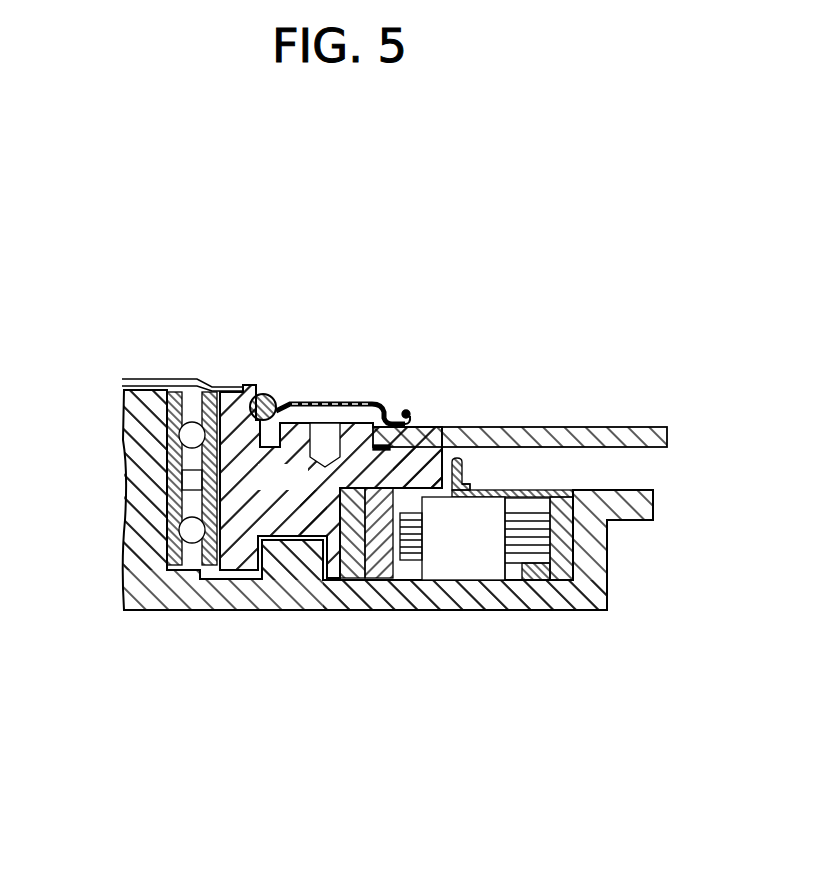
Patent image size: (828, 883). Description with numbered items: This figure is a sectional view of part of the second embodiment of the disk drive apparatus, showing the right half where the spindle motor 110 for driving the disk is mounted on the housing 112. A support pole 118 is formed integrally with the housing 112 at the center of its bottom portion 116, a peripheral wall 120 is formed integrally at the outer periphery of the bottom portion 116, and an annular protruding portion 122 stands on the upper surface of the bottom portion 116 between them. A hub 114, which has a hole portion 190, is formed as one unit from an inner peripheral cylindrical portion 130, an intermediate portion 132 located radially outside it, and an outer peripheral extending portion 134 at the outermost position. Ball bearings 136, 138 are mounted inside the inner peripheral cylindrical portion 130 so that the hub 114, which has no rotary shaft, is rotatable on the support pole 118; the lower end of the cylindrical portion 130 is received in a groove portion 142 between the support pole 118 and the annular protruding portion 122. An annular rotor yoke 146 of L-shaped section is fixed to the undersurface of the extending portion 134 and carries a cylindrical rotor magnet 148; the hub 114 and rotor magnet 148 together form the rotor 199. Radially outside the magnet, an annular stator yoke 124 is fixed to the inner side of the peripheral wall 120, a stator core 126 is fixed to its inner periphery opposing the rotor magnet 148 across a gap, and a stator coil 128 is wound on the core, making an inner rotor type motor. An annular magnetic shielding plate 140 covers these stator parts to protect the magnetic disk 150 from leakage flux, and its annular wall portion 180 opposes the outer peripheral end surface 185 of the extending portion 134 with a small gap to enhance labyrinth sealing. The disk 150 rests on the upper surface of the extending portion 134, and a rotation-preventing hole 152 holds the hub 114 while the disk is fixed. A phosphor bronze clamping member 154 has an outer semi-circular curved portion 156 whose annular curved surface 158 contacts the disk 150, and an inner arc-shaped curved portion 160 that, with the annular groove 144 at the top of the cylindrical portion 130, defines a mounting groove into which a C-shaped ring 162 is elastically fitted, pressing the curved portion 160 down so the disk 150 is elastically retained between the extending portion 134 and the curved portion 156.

The spindle motor 110 is at (247, 616).
The housing 112 is at (452, 612).
The hub 114 is at (253, 383).
The bottom portion 116 is at (370, 580).
The support pole 118 is at (128, 492).
The peripheral wall 120 is at (593, 572).
The annular protruding portion 122 is at (286, 552).
The annular stator yoke 124 is at (543, 573).
The stator core 126 is at (412, 562).
The stator coil 128 is at (474, 568).
The inner peripheral cylindrical portion 130 is at (243, 566).
The intermediate portion 132 is at (312, 516).
The outer peripheral extending portion 134 is at (420, 460).
The ball bearing 136 is at (180, 430).
The ball bearing 138 is at (180, 537).
The annular magnetic shielding plate 140 is at (535, 490).
The groove portion 142 is at (271, 546).
The annular groove 144 is at (247, 383).
The annular rotor yoke 146 is at (356, 570).
The rotor magnet 148 is at (380, 579).
The magnetic disk 150 is at (648, 427).
The rotation-preventing hole 152 is at (330, 437).
The clamping member 154 is at (317, 402).
The semi-circular curved portion 156 is at (400, 410).
The annular curved surface 158 is at (412, 420).
The arc-shaped curved portion 160 is at (285, 428).
The C-shaped ring 162 is at (270, 397).
The annular wall portion 180 is at (470, 486).
The outer peripheral end surface 185 is at (463, 478).
The hole portion 190 is at (190, 555).
The rotor 199 is at (421, 471).